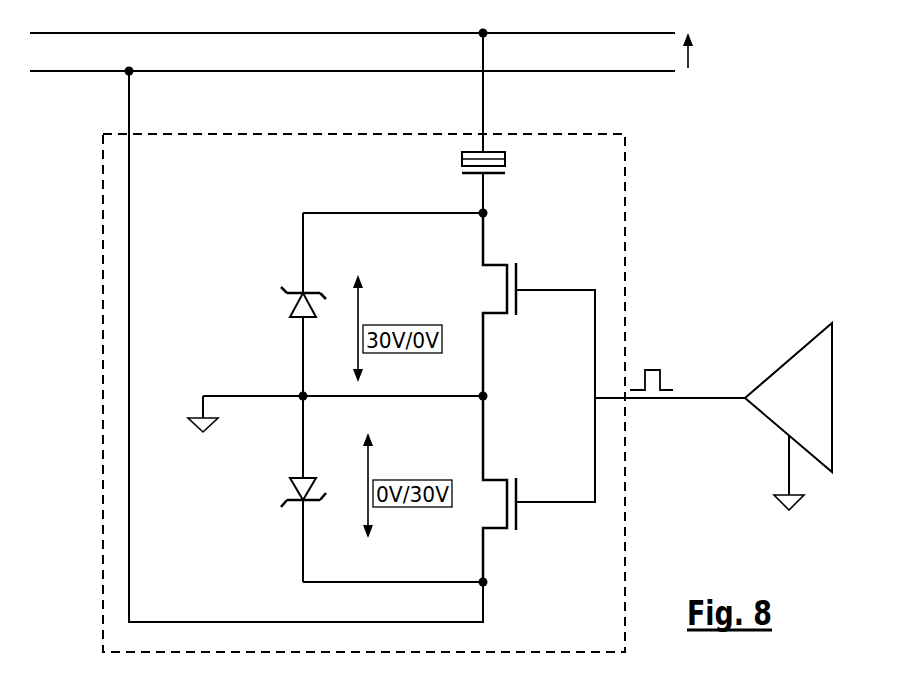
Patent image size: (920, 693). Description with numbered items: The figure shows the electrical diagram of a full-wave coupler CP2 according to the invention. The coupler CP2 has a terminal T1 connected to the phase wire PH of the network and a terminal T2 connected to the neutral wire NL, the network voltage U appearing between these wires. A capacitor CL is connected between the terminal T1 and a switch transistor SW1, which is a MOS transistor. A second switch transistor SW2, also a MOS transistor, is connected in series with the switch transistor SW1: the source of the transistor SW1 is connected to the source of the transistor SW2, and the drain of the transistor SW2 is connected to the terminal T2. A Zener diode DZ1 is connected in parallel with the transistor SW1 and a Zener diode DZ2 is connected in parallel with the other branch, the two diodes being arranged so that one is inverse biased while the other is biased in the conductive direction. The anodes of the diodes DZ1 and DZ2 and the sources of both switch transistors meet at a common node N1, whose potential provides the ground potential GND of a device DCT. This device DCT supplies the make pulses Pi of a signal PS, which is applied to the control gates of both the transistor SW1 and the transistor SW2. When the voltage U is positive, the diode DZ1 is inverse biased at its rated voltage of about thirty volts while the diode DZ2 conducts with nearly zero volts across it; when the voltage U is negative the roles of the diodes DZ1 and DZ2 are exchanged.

The phase wire PH is at (352, 24).
The neutral wire NL is at (352, 62).
The voltage U is at (701, 51).
The terminal T1 is at (500, 92).
The terminal T2 is at (306, 346).
The capacitor CL is at (470, 172).
The Zener diode DZ1 is at (312, 316).
The Zener diode DZ2 is at (310, 478).
The common node N1 is at (398, 396).
The ground potential GND is at (225, 400).
The switch transistor SW1 is at (517, 303).
The switch transistor SW2 is at (517, 492).
The signal PS is at (670, 385).
The make pulses Pi is at (655, 370).
The device DCT is at (830, 408).
The full-wave coupler CP2 is at (567, 641).